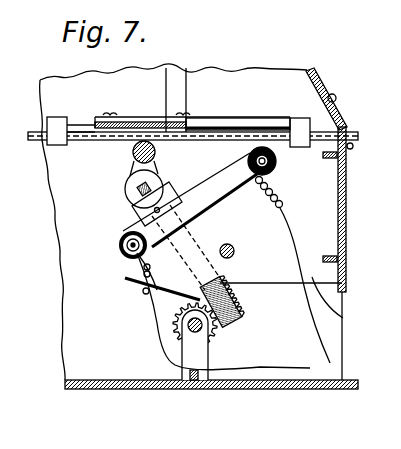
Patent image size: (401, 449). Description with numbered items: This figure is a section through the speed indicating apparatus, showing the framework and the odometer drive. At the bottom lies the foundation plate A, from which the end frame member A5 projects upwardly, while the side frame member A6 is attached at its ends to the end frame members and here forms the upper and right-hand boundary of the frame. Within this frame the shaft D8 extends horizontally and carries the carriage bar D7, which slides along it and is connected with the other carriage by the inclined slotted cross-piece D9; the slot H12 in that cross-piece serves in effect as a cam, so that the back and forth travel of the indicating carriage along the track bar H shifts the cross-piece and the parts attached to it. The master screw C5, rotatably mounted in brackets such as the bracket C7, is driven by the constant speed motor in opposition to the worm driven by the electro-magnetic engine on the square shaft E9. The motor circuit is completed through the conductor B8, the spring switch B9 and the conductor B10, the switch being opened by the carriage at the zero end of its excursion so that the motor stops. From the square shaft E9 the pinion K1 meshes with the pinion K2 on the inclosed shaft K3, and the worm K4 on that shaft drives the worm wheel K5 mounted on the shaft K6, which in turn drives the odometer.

The foundation plate A is at (238, 389).
The end frame member A5 is at (73, 348).
The side frame member A6 is at (322, 79).
The conductor B8 is at (158, 320).
The spring switch B9 is at (225, 187).
The conductor B10 is at (283, 233).
The master screw C5 is at (132, 158).
The bracket C7 is at (343, 318).
The carriage bar D7 is at (255, 118).
The shaft D8 is at (73, 130).
The inclined slotted cross-piece D9 is at (133, 117).
The square shaft E9 is at (126, 191).
The track bar H is at (233, 257).
The slot H12 is at (153, 133).
The pinion K1 is at (128, 199).
The pinion K2 is at (124, 227).
The inclosed shaft K3 is at (190, 252).
The worm K4 is at (233, 328).
The worm wheel K5 is at (180, 326).
The shaft K6 is at (207, 333).